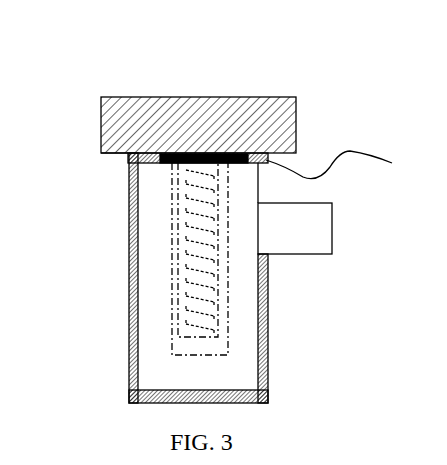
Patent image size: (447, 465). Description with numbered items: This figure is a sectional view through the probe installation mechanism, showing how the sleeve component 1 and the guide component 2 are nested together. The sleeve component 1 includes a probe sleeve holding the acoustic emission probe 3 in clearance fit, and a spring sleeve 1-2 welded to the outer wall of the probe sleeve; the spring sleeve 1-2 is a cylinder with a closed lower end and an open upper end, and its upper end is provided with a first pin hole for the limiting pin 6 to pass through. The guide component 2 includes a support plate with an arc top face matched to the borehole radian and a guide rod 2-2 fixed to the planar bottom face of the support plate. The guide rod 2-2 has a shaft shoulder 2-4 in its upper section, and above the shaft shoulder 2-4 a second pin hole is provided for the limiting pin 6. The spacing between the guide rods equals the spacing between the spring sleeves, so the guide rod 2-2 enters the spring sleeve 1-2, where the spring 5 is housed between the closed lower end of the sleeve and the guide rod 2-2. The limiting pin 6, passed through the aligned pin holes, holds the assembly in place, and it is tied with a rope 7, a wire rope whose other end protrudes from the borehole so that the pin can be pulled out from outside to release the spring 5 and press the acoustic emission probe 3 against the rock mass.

The sleeve component 1 is at (156, 278).
The spring sleeve 1-2 is at (125, 259).
The guide component 2 is at (198, 83).
The guide rod 2-2 is at (251, 259).
The shaft shoulder 2-4 is at (73, 122).
The acoustic emission probe 3 is at (325, 254).
The spring 5 is at (248, 252).
The limiting pin 6 is at (184, 98).
The rope 7 is at (329, 110).